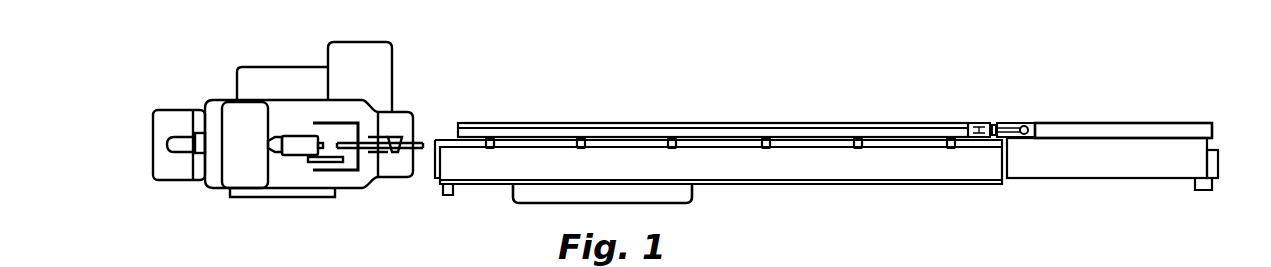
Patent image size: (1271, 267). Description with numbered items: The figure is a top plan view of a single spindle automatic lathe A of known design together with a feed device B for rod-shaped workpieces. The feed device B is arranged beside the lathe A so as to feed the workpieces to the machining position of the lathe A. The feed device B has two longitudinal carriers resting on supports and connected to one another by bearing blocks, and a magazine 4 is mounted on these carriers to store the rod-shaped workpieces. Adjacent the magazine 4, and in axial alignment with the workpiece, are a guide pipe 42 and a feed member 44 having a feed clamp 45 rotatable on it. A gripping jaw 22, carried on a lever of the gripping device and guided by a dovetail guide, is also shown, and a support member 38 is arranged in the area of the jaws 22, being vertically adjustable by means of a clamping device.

The single spindle automatic lathe A is at (271, 57).
The feed device B is at (847, 107).
The magazine 4 is at (756, 165).
The gripping jaw 22 is at (978, 123).
The support member 38 is at (994, 124).
The guide pipe 42 is at (803, 128).
The feed member 44 is at (1112, 123).
The feed clamp 45 is at (1015, 123).